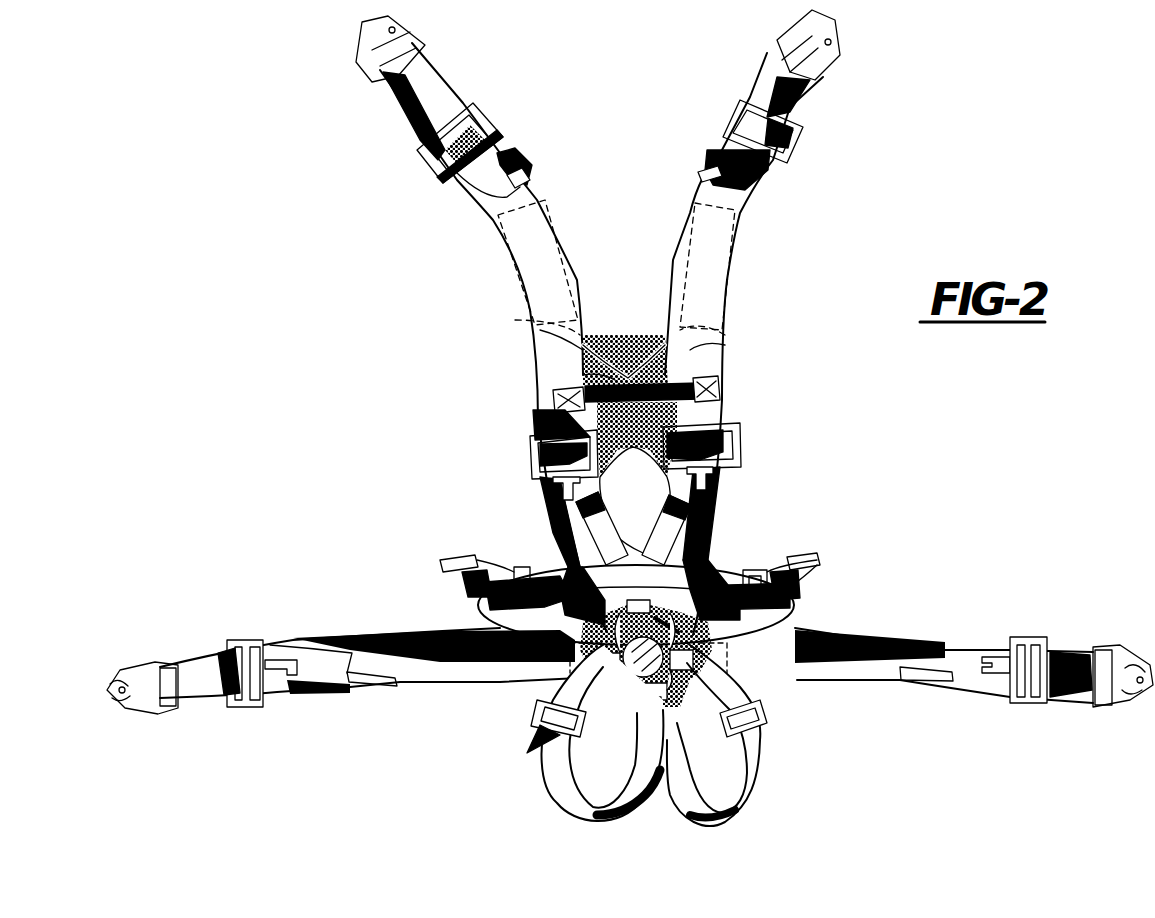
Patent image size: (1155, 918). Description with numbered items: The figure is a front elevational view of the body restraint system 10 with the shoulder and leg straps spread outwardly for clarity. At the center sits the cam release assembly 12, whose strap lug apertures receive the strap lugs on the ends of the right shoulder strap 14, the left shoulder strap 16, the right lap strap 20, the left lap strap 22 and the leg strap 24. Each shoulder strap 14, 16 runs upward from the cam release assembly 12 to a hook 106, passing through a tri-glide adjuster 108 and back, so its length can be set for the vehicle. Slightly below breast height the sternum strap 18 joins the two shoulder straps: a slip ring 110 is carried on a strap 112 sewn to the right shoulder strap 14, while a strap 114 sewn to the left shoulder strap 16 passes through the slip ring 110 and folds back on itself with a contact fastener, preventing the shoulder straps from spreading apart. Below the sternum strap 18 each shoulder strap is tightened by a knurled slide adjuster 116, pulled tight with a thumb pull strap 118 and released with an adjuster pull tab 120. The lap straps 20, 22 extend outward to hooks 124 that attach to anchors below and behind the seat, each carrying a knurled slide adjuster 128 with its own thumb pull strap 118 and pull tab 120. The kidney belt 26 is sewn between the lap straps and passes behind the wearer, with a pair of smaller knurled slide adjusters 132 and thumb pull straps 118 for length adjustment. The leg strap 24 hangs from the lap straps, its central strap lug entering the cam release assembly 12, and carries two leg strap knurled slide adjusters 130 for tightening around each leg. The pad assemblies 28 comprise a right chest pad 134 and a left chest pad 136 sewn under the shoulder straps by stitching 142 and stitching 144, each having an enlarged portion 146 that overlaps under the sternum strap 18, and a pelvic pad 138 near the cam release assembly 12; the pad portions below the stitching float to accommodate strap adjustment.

The body restraint system 10 is at (953, 167).
The cam release assembly 12 is at (680, 710).
The right shoulder strap 14 is at (390, 121).
The left shoulder strap 16 is at (788, 211).
The sternum strap 18 is at (620, 367).
The right lap strap 20 is at (453, 668).
The left lap strap 22 is at (880, 673).
The leg strap 24 is at (627, 813).
The kidney belt 26 is at (800, 613).
The pad assemblies 28 is at (548, 428).
The hook 106 is at (422, 38).
The tri-glide adjuster 108 is at (497, 125).
The slip ring 110 is at (597, 373).
The strap 112 is at (580, 393).
The strap 114 is at (728, 384).
The knurled slide adjuster 116 is at (530, 457).
The thumb pull strap 118 is at (570, 553).
The adjuster pull tab 120 is at (545, 492).
The hook 124 is at (157, 717).
The knurled slide adjuster 128 is at (247, 640).
The leg strap knurled slide adjuster 130 is at (533, 723).
The knurled slide adjuster 132 is at (523, 563).
The right chest pad 134 is at (583, 343).
The left chest pad 136 is at (727, 327).
The pelvic pad 138 is at (620, 708).
The stitching 142 is at (503, 232).
The stitching 144 is at (738, 243).
The enlarged portion 146 is at (583, 347).